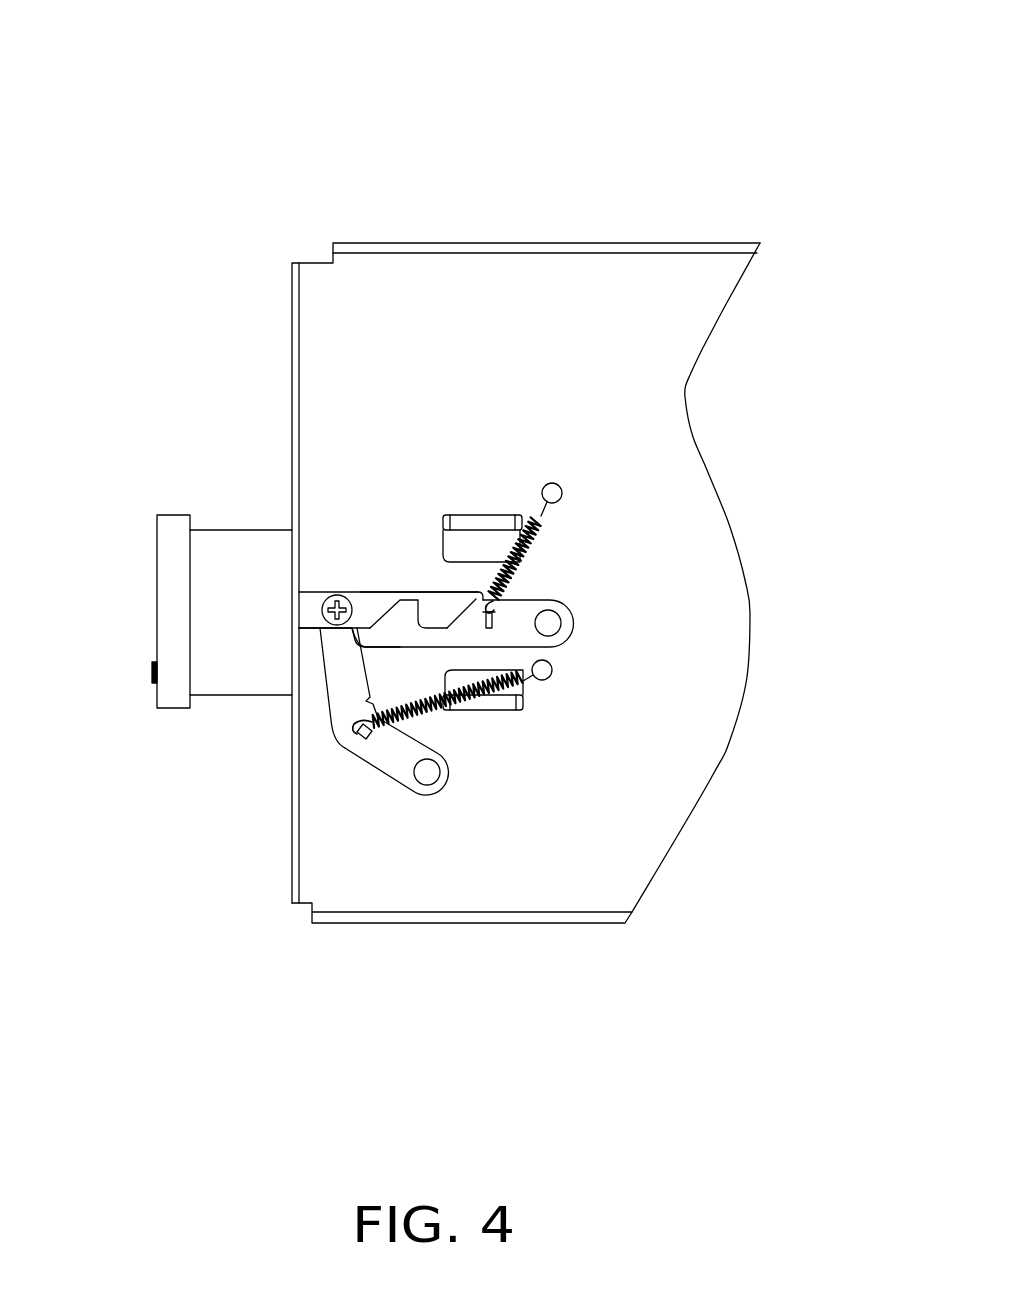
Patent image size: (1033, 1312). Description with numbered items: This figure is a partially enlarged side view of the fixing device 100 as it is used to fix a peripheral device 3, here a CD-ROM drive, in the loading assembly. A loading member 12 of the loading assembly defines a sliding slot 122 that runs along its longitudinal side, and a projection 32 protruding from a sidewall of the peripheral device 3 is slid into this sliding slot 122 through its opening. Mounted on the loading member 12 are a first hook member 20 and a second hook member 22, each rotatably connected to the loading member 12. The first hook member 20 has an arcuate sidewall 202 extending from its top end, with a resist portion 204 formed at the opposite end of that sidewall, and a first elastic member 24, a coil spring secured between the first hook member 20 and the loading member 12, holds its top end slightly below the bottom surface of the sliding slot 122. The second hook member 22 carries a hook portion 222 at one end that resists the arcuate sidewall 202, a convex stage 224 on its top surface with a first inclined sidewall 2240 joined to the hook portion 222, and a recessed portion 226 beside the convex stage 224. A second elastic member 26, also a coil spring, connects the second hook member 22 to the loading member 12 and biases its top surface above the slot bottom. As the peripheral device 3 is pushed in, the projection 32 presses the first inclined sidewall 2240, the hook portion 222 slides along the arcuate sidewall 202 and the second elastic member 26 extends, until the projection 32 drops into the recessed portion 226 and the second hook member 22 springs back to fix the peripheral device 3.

The fixing device 100 is at (258, 70).
The loading member 12 is at (610, 273).
The sliding slot 122 is at (315, 605).
The peripheral device 3 is at (167, 598).
The projection 32 is at (325, 617).
The second hook member 22 is at (503, 408).
The hook portion 222 is at (365, 637).
The convex stage 224 is at (407, 608).
The first inclined sidewall 2240 is at (387, 592).
The recessed portion 226 is at (440, 608).
The second elastic member 26 is at (553, 517).
The first elastic member 24 is at (433, 707).
The first hook member 20 is at (309, 761).
The arcuate sidewall 202 is at (353, 702).
The resist portion 204 is at (397, 765).